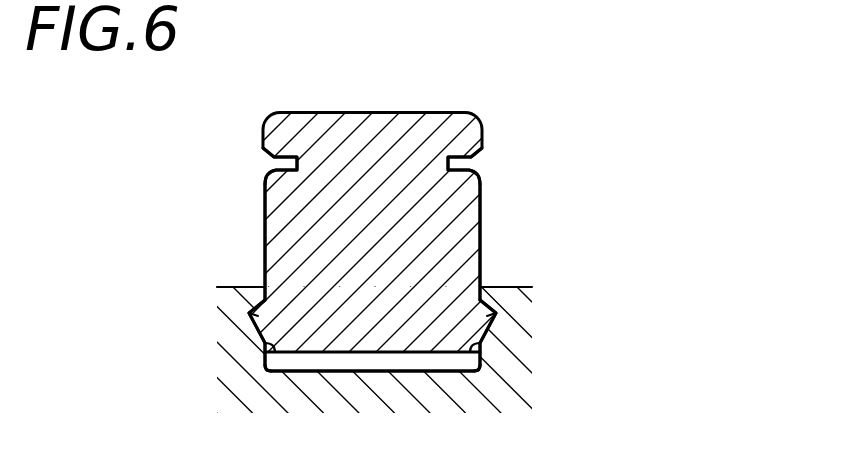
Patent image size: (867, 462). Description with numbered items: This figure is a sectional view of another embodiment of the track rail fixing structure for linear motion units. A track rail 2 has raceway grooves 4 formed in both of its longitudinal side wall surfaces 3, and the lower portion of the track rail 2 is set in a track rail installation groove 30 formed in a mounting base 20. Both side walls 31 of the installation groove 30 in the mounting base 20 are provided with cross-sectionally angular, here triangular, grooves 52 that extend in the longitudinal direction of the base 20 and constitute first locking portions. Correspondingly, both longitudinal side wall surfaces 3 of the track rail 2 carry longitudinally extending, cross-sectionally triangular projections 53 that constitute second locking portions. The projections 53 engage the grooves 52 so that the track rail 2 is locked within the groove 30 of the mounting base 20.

The track rail 2 is at (372, 187).
The longitudinal side wall surfaces 3 is at (265, 228).
The raceway grooves 4 is at (276, 177).
The mounting base 20 is at (502, 356).
The track rail installation groove 30 is at (367, 362).
The side walls 31 is at (270, 350).
The grooves 52 is at (250, 315).
The projections 53 is at (258, 318).